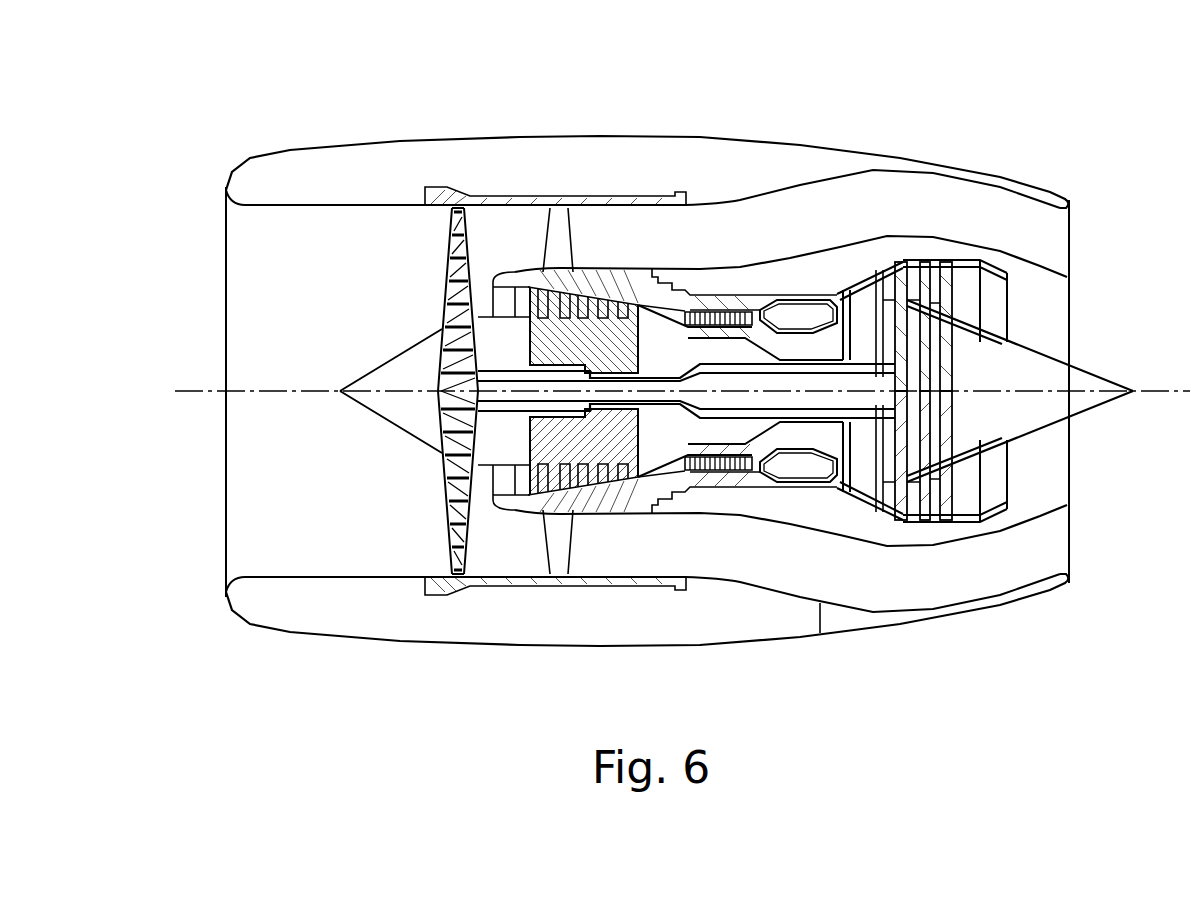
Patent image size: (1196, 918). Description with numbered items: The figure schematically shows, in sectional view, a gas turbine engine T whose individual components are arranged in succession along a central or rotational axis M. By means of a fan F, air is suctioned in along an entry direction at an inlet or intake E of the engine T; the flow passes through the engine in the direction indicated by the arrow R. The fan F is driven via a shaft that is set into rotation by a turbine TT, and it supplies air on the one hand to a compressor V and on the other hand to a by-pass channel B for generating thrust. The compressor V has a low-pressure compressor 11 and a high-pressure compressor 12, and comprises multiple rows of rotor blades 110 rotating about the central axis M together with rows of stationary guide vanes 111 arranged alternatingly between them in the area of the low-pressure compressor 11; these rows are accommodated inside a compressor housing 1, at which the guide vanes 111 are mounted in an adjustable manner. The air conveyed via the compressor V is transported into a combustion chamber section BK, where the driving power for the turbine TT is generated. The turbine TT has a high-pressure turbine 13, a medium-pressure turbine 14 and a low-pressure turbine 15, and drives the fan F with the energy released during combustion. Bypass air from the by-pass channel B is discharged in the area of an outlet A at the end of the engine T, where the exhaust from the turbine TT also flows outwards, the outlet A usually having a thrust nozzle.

The gas turbine engine T is at (1042, 104).
The inlet or intake E is at (258, 507).
The flow direction R is at (345, 262).
The outlet A is at (1052, 297).
The central axis M is at (1165, 395).
The fan F is at (447, 238).
The compressor V is at (608, 556).
The housing 1 is at (527, 258).
The by-pass channel B is at (783, 220).
The low-pressure compressor 11 is at (578, 292).
The guide vanes 111 is at (625, 298).
The rotor blades 110 is at (537, 493).
The high-pressure compressor 12 is at (700, 306).
The combustion chamber section BK is at (793, 508).
The high-pressure turbine 13 is at (838, 280).
The medium-pressure turbine 14 is at (874, 280).
The low-pressure turbine 15 is at (933, 263).
The turbine TT is at (893, 577).